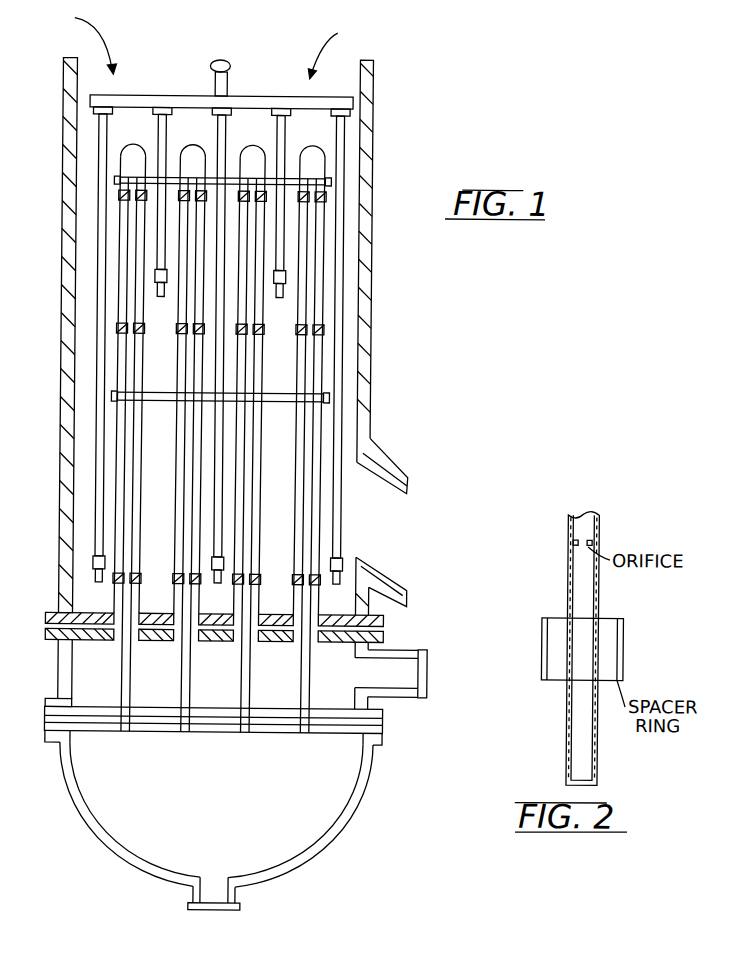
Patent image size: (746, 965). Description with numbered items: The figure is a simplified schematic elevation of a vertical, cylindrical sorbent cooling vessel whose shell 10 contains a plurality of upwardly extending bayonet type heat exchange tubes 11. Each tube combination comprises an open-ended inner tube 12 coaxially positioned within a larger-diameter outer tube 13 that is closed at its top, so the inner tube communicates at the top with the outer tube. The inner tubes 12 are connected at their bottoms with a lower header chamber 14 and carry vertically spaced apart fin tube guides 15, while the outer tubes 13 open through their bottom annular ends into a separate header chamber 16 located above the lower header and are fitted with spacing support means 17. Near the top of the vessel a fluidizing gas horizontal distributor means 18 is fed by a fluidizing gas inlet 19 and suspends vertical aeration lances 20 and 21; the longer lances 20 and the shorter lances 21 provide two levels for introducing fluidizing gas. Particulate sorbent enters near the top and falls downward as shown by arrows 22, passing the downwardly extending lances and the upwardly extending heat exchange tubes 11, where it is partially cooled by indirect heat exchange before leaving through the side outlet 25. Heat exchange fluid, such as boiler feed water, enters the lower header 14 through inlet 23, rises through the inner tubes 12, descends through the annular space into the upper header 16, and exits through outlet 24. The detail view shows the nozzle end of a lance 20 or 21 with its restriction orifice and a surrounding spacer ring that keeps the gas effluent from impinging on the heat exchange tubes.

In FIG. 1, the shell 10 is at (376, 250).
In FIG. 1, the bayonet type heat exchange tubes 11 is at (133, 142).
In FIG. 1, the inner tube 12 is at (143, 356).
In FIG. 1, the outer tube 13 is at (144, 452).
In FIG. 1, the header chamber 14 is at (250, 820).
In FIG. 1, the fin tube guide 15 is at (325, 193).
In FIG. 1, the header chamber 16 is at (291, 672).
In FIG. 1, the spacing support means 17 is at (334, 175).
In FIG. 1, the fluidizing gas horizontal distributor means 18 is at (229, 83).
In FIG. 1, the fluidizing gas inlet 19 is at (226, 58).
In FIG. 1, the vertical aeration lances 20 is at (214, 136).
In FIG. 2, the vertical aeration lances 20 is at (543, 647).
In FIG. 1, the vertical aeration lances 21 is at (287, 130).
In FIG. 2, the vertical aeration lances 21 is at (573, 575).
In FIG. 1, the arrows 22 is at (208, 43).
In FIG. 1, the inlet 23 is at (245, 886).
In FIG. 1, the outlet 24 is at (409, 693).
In FIG. 1, the side outlet 25 is at (396, 460).